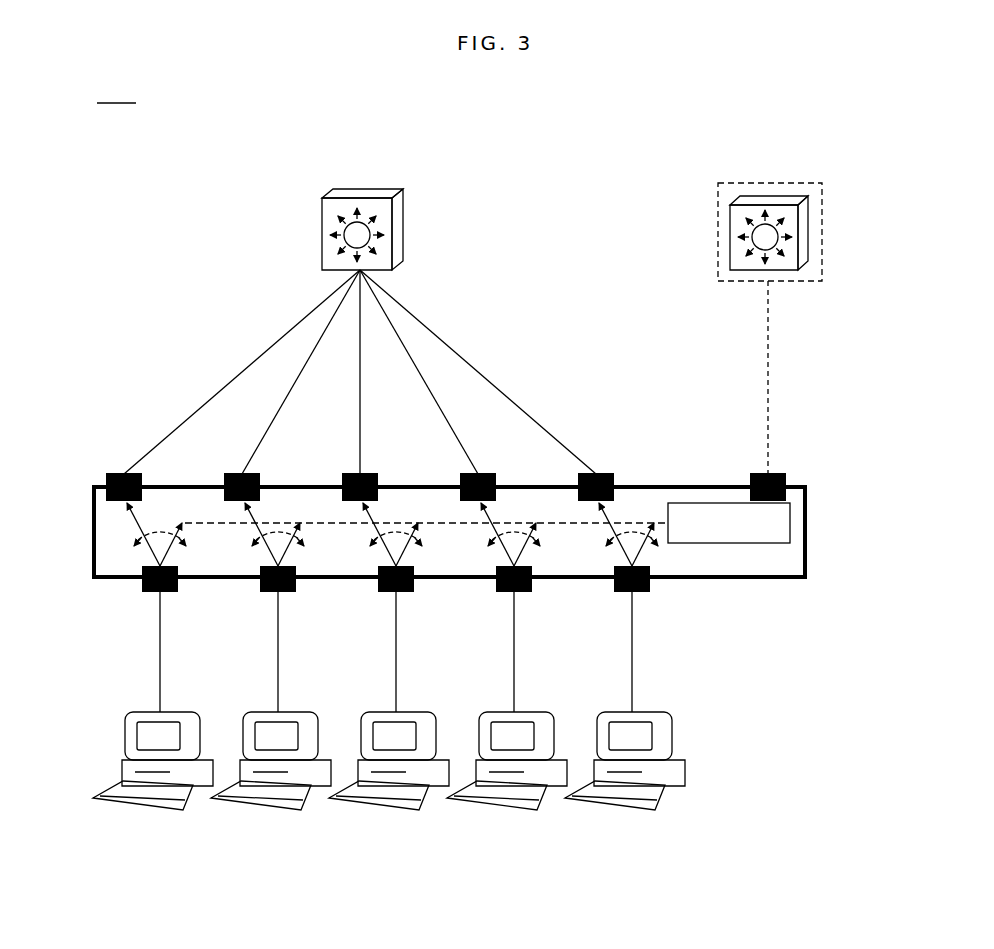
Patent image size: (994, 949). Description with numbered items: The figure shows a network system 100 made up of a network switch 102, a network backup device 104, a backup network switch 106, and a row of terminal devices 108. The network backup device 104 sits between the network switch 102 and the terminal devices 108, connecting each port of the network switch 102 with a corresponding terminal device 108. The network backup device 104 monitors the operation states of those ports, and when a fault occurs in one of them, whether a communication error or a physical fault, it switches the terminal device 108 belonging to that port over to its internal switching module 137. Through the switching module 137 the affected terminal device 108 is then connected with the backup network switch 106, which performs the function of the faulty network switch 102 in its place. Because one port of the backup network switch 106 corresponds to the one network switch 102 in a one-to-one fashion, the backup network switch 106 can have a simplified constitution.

The network system 100 is at (118, 90).
The network switch 102 is at (368, 198).
The network backup device 104 is at (449, 531).
The backup network switch 106 is at (780, 183).
The terminal devices 108 is at (168, 712).
The switching module 137 is at (736, 545).